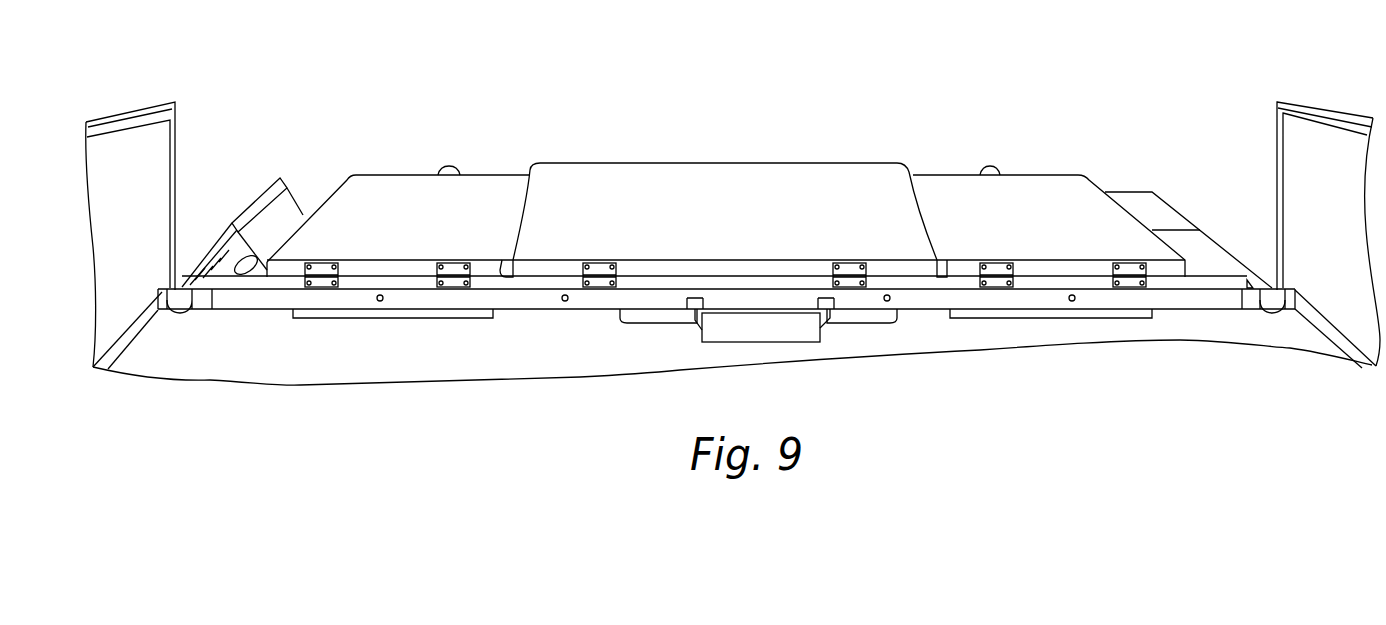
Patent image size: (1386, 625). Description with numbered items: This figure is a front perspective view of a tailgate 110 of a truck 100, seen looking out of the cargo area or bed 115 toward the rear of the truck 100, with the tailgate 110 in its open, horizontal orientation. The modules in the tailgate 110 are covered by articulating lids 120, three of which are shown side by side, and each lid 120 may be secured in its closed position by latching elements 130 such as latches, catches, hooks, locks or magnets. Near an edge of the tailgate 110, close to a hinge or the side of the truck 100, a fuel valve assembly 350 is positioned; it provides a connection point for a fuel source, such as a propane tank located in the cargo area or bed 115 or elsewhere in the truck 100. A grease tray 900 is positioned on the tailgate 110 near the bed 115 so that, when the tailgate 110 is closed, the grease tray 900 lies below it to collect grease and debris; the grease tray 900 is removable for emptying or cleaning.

The truck 100 is at (1300, 105).
The tailgate 110 is at (1148, 200).
The cargo area or bed 115 is at (537, 359).
The articulating lid 120 is at (380, 203).
The latching element 130 is at (455, 172).
The fuel valve assembly 350 is at (225, 232).
The grease tray 900 is at (800, 330).